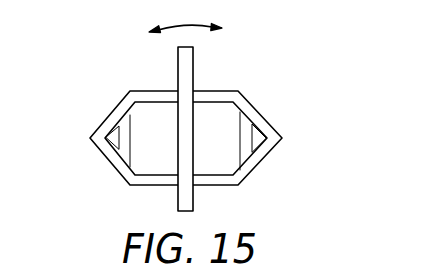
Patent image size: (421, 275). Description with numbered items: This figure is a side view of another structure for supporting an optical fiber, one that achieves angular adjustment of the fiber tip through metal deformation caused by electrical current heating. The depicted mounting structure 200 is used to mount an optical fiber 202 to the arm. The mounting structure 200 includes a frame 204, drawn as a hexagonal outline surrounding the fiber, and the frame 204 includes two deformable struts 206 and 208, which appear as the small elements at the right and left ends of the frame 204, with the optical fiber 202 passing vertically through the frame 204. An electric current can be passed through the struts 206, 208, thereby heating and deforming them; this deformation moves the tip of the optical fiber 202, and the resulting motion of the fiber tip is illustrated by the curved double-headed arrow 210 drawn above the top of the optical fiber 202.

The mounting structure 200 is at (209, 121).
The optical fiber 202 is at (195, 196).
The frame 204 is at (214, 96).
The deformable strut 206 is at (243, 145).
The deformable strut 208 is at (128, 138).
The arrow 210 is at (175, 28).